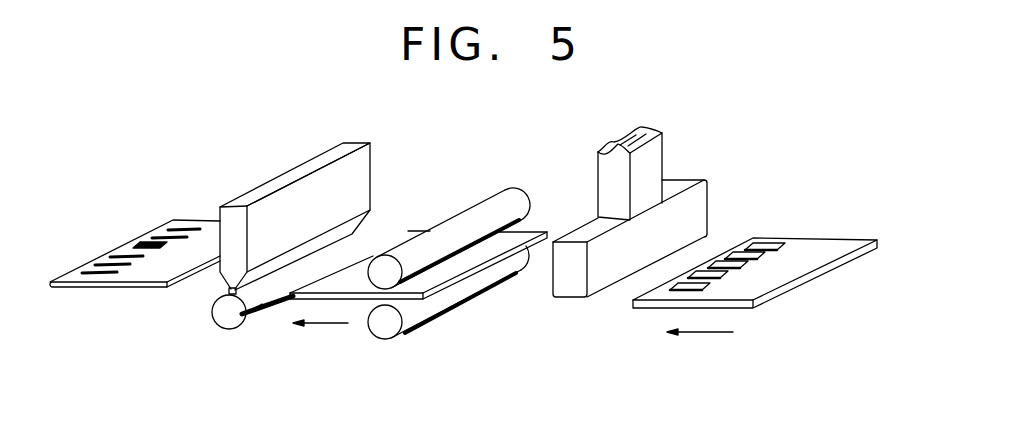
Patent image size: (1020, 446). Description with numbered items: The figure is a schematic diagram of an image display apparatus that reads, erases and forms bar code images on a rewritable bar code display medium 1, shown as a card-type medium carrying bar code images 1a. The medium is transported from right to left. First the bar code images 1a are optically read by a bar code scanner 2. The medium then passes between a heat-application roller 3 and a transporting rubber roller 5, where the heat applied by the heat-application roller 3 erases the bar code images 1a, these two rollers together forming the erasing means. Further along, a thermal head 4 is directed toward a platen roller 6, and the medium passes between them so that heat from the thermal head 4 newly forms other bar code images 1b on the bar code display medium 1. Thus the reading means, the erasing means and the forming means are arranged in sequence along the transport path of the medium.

The rewritable bar code display medium 1 is at (755, 273).
The bar code images 1a is at (757, 248).
The bar code images 1b is at (153, 232).
The bar code scanner 2 is at (681, 178).
The heat-application roller 3 is at (482, 206).
The thermal head 4 is at (367, 171).
The transporting rubber roller 5 is at (440, 312).
The platen roller 6 is at (232, 323).